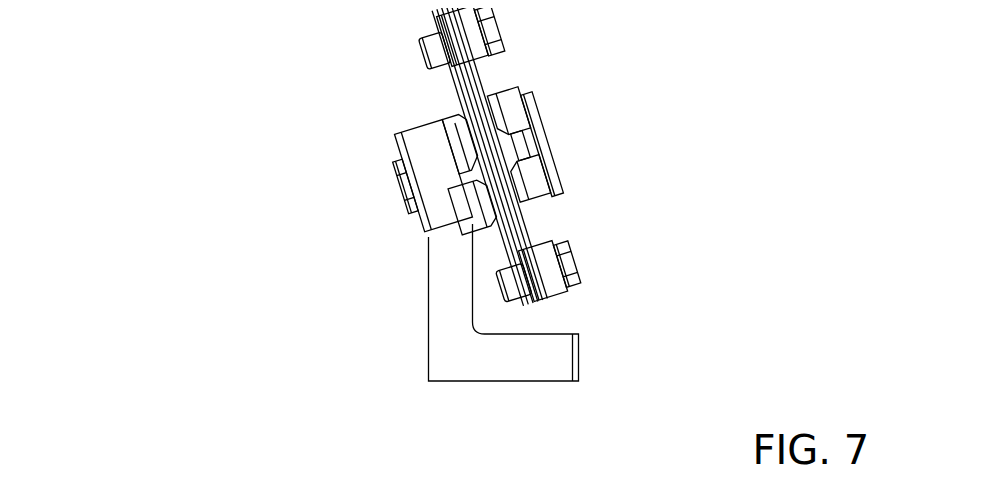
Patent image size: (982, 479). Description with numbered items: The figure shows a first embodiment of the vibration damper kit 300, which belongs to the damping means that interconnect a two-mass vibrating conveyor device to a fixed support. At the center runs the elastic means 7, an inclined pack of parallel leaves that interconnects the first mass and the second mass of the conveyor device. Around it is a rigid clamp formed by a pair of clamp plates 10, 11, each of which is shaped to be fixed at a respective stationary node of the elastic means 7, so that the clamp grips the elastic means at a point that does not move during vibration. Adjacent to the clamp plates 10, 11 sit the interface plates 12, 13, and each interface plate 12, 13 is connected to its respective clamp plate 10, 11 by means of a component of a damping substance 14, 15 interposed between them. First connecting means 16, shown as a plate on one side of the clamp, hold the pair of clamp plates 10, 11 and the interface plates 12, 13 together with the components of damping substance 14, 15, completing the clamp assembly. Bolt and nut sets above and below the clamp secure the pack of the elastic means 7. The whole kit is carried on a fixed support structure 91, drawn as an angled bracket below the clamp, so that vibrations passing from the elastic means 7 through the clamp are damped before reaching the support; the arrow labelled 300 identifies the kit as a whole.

The elastic means 7 is at (518, 231).
The clamp plate 10 is at (473, 160).
The clamp plate 11 is at (506, 150).
The interface plate 12 is at (462, 210).
The interface plate 13 is at (542, 187).
The component of a damping substance 14 is at (477, 193).
The component of a damping substance 15 is at (508, 118).
The first connecting means 16 is at (550, 130).
The fixed support structure 91 is at (525, 364).
The vibration damper kit 300 is at (152, 239).